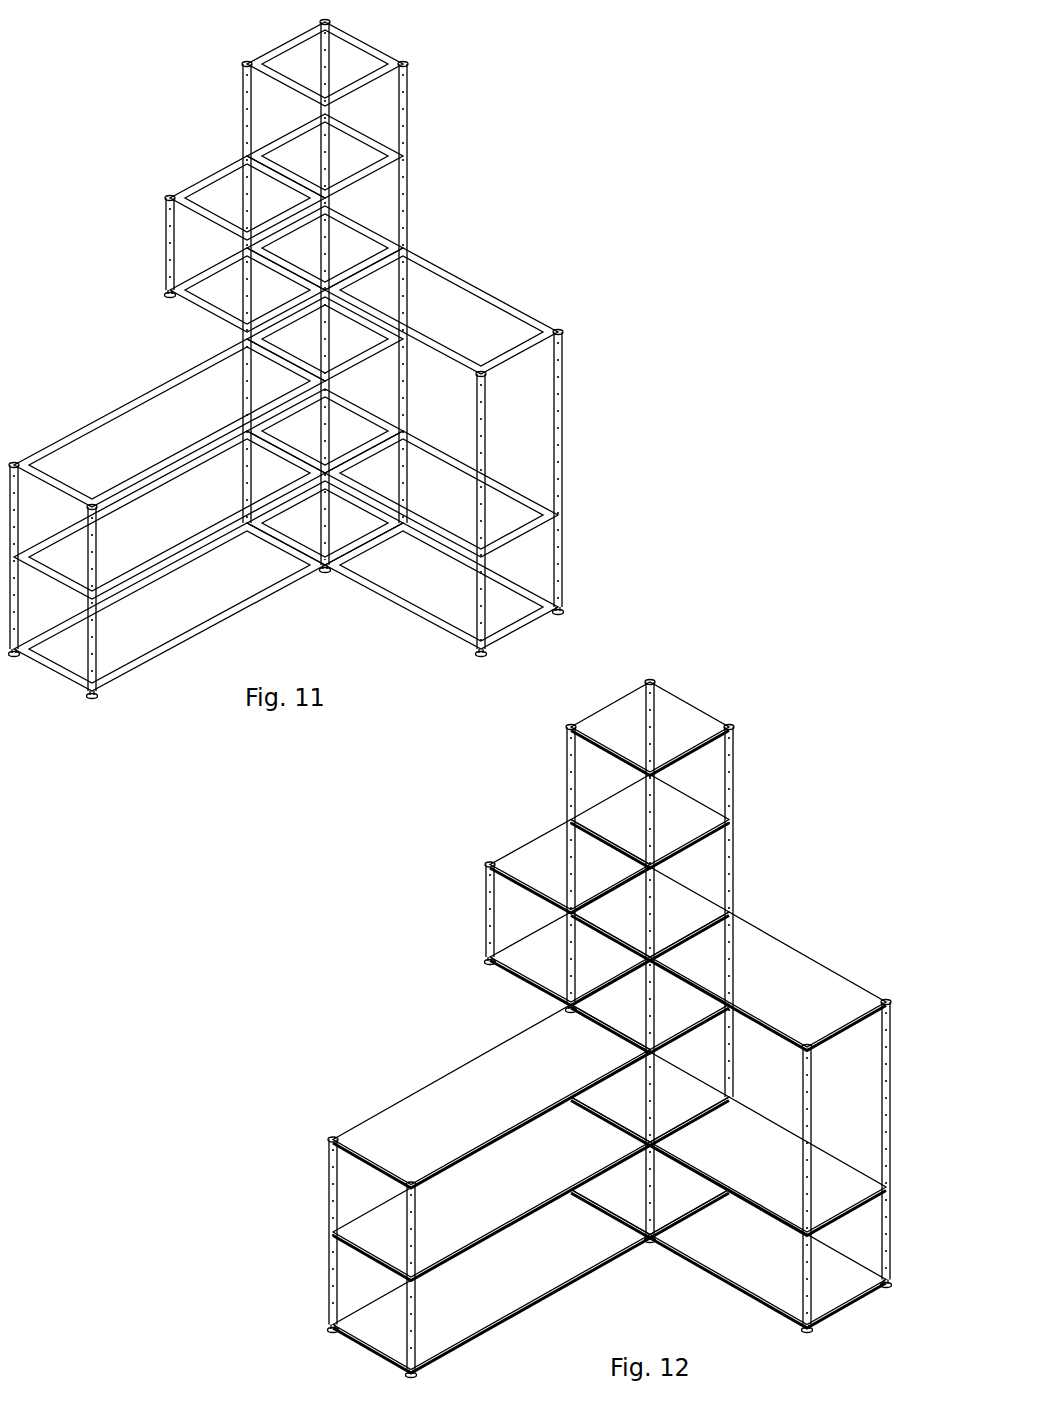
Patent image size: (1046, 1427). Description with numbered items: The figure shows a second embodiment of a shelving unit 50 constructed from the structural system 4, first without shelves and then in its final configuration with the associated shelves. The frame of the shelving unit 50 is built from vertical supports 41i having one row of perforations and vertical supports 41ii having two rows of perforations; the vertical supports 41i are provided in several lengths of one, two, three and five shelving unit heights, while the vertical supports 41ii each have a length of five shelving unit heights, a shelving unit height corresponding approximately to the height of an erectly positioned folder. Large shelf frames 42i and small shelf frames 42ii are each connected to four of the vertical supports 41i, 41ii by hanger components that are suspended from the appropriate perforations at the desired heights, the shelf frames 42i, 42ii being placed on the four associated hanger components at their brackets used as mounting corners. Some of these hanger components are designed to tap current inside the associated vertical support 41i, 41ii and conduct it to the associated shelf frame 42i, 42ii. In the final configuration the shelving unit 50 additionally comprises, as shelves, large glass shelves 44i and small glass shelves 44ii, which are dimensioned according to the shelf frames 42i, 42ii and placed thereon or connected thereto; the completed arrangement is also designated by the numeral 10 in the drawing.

In FIG. 11, the shelving unit 50 is at (342, 413).
In FIG. 11, the structural system 4 is at (123, 712).
In FIG. 12, the structural system 4 is at (409, 1188).
In FIG. 12, the modular shelving assembly 10 is at (530, 1004).
In FIG. 11, the vertical support with one row of perforations 41i is at (566, 374).
In FIG. 12, the vertical support with one row of perforations 41i is at (332, 1160).
In FIG. 11, the vertical support with two rows of perforations 41ii is at (405, 108).
In FIG. 12, the vertical support with two rows of perforations 41ii is at (570, 792).
In FIG. 11, the large shelf frame 42i is at (497, 298).
In FIG. 11, the small shelf frame 42ii is at (211, 176).
In FIG. 12, the large glass shelf 44i is at (442, 1095).
In FIG. 12, the small glass shelf 44ii is at (682, 720).